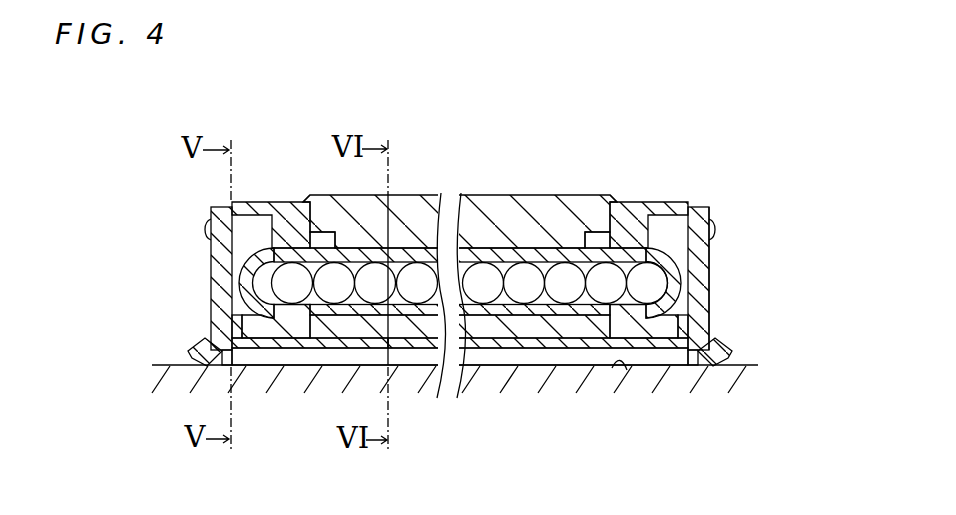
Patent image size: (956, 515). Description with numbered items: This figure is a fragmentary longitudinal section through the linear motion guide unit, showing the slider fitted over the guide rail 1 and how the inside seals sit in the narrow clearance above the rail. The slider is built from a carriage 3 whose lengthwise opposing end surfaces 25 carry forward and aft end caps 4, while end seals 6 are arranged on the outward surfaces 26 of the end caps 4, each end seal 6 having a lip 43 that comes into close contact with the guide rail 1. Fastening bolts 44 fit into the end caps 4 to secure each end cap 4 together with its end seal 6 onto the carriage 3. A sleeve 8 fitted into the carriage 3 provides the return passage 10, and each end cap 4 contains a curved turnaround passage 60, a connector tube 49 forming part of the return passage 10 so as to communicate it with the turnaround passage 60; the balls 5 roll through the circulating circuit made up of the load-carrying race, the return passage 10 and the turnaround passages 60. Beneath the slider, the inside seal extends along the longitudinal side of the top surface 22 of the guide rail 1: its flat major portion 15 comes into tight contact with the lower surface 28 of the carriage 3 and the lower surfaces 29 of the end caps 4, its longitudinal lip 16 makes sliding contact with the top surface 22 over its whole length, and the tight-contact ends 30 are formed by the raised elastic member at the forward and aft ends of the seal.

The guide rail 1 is at (523, 378).
The carriage 3 is at (539, 215).
The end cap 4 is at (283, 204).
The ball 5 is at (416, 270).
The end seal 6 is at (220, 293).
The sleeve 8 is at (478, 255).
The return passage 10 is at (505, 262).
The major portion 15 is at (265, 346).
The longitudinal lip 16 is at (495, 357).
The top surface 22 is at (627, 370).
The end surface 25 is at (300, 210).
The outward surface 26 is at (710, 250).
The lower surface 28 is at (423, 340).
The lower surface 29 is at (283, 340).
The tight-contact end 30 is at (222, 361).
The lip 43 is at (200, 348).
The fastening bolt 44 is at (210, 229).
The connector tube 49 is at (324, 242).
The turnaround passage 60 is at (265, 277).